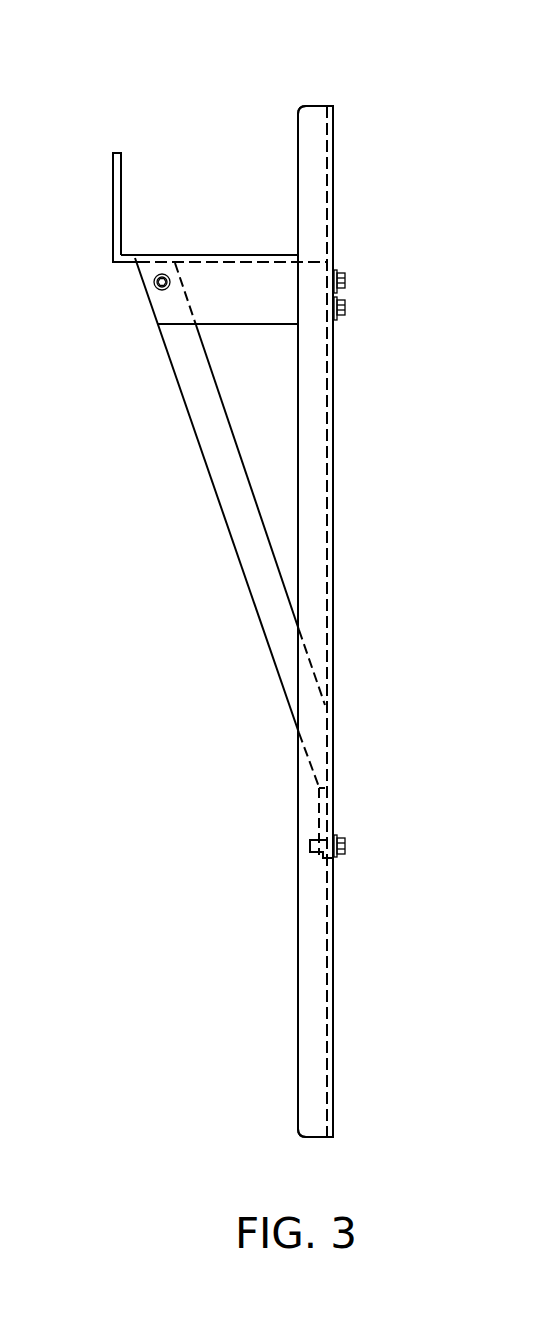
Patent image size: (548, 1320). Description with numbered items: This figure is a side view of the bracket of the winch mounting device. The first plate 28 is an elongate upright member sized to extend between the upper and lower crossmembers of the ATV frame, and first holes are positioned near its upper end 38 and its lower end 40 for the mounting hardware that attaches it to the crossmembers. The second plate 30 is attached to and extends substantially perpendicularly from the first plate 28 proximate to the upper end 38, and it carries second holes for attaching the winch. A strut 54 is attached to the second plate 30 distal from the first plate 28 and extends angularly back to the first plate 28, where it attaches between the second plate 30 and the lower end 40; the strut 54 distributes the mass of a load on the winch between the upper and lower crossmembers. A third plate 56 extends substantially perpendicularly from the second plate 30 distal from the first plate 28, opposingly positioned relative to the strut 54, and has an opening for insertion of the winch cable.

The first plate 28 is at (333, 523).
The second plate 30 is at (220, 255).
The upper end 38 is at (322, 102).
The lower end 40 is at (315, 1137).
The strut 54 is at (212, 482).
The third plate 56 is at (113, 208).